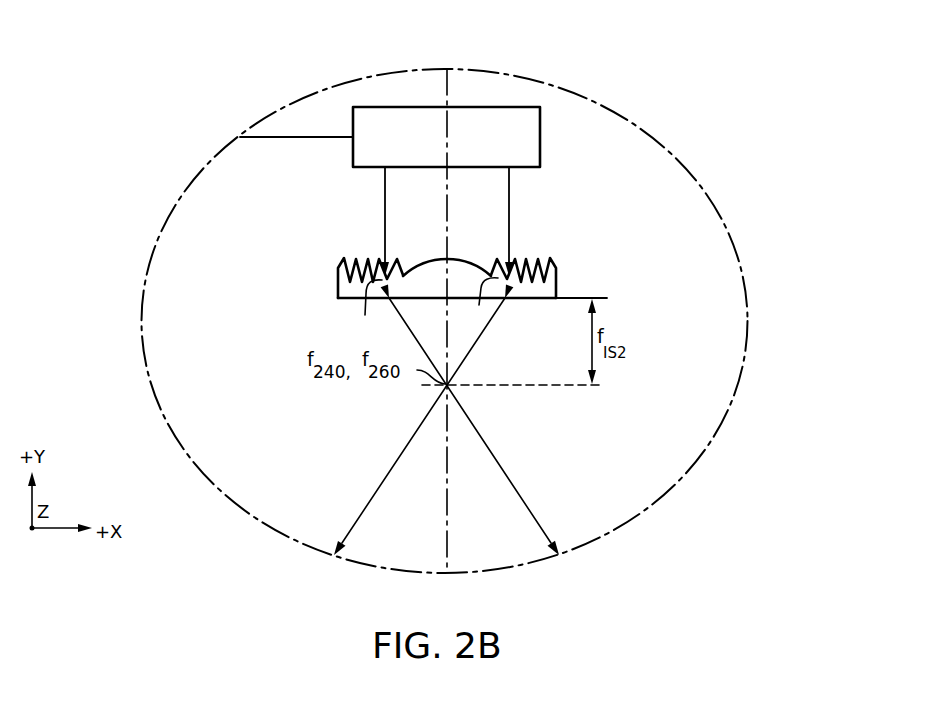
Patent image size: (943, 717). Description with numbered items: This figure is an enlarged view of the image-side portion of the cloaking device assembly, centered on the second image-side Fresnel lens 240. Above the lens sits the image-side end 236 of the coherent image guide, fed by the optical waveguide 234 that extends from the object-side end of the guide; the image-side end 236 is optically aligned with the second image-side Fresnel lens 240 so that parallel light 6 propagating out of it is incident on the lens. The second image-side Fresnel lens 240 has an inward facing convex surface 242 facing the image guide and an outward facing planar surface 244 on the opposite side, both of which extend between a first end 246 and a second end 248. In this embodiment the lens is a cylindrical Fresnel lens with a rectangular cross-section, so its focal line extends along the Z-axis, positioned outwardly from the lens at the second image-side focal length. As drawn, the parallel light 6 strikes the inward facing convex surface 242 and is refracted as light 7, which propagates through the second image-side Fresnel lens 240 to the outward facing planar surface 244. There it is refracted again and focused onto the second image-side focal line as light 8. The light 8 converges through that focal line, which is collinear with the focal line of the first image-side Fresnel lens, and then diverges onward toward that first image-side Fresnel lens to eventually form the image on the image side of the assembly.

The optical waveguide 234 is at (295, 137).
The image-side end 236 is at (540, 135).
The parallel light 6 is at (383, 210).
The second image-side Fresnel lens 240 is at (455, 264).
The inward facing convex surface 242 is at (466, 260).
The outward facing planar surface 244 is at (527, 299).
The first end 246 is at (558, 287).
The second end 248 is at (338, 290).
The light 7 is at (436, 309).
The light 8 is at (388, 477).